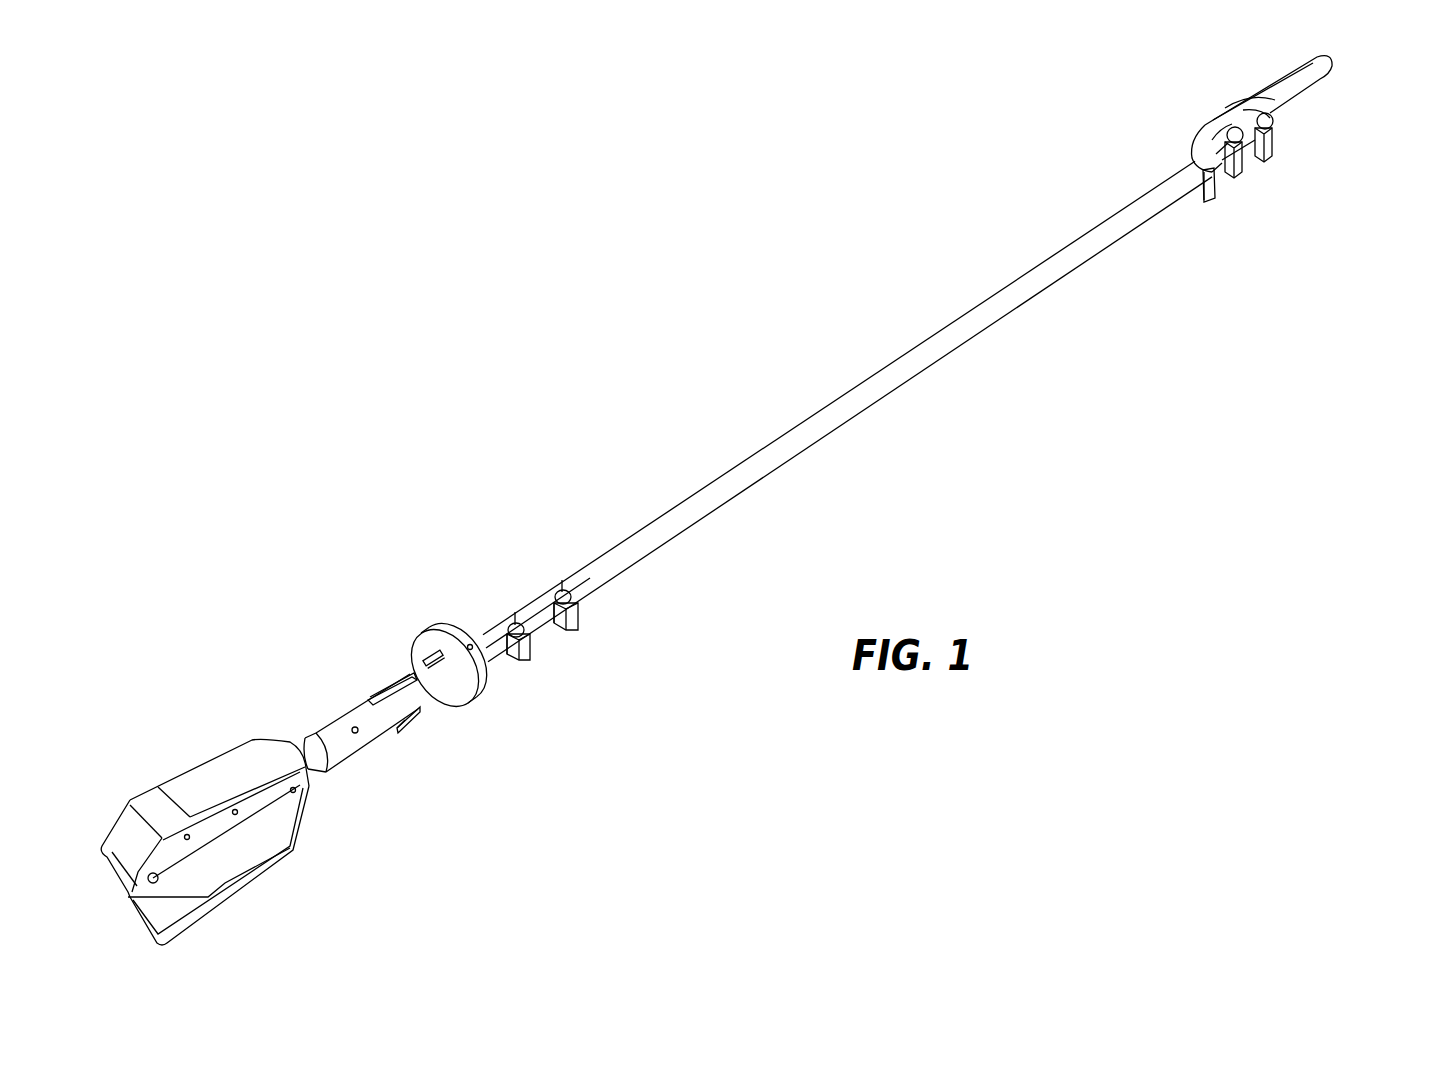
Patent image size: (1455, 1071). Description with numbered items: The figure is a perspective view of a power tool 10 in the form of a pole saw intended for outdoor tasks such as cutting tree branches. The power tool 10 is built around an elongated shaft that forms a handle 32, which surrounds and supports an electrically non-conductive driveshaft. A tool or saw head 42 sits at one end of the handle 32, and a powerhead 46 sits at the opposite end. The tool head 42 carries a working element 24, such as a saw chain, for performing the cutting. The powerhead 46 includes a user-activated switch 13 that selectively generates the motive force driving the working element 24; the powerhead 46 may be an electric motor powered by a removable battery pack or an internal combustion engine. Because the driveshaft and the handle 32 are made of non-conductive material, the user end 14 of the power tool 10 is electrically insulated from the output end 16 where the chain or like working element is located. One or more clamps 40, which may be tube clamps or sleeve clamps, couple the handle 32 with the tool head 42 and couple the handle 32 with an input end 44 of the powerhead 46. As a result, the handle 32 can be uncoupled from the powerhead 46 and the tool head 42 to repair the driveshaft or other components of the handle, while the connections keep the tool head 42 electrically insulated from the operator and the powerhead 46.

The power tool 10 is at (1308, 303).
The user-activated switch 13 is at (412, 667).
The user end 14 is at (247, 895).
The output end 16 is at (1366, 63).
The working element 24 is at (1300, 68).
The handle 32 is at (870, 390).
The clamps 40 is at (533, 613).
The tool head 42 is at (1320, 91).
The input end 44 is at (452, 677).
The powerhead 46 is at (203, 783).